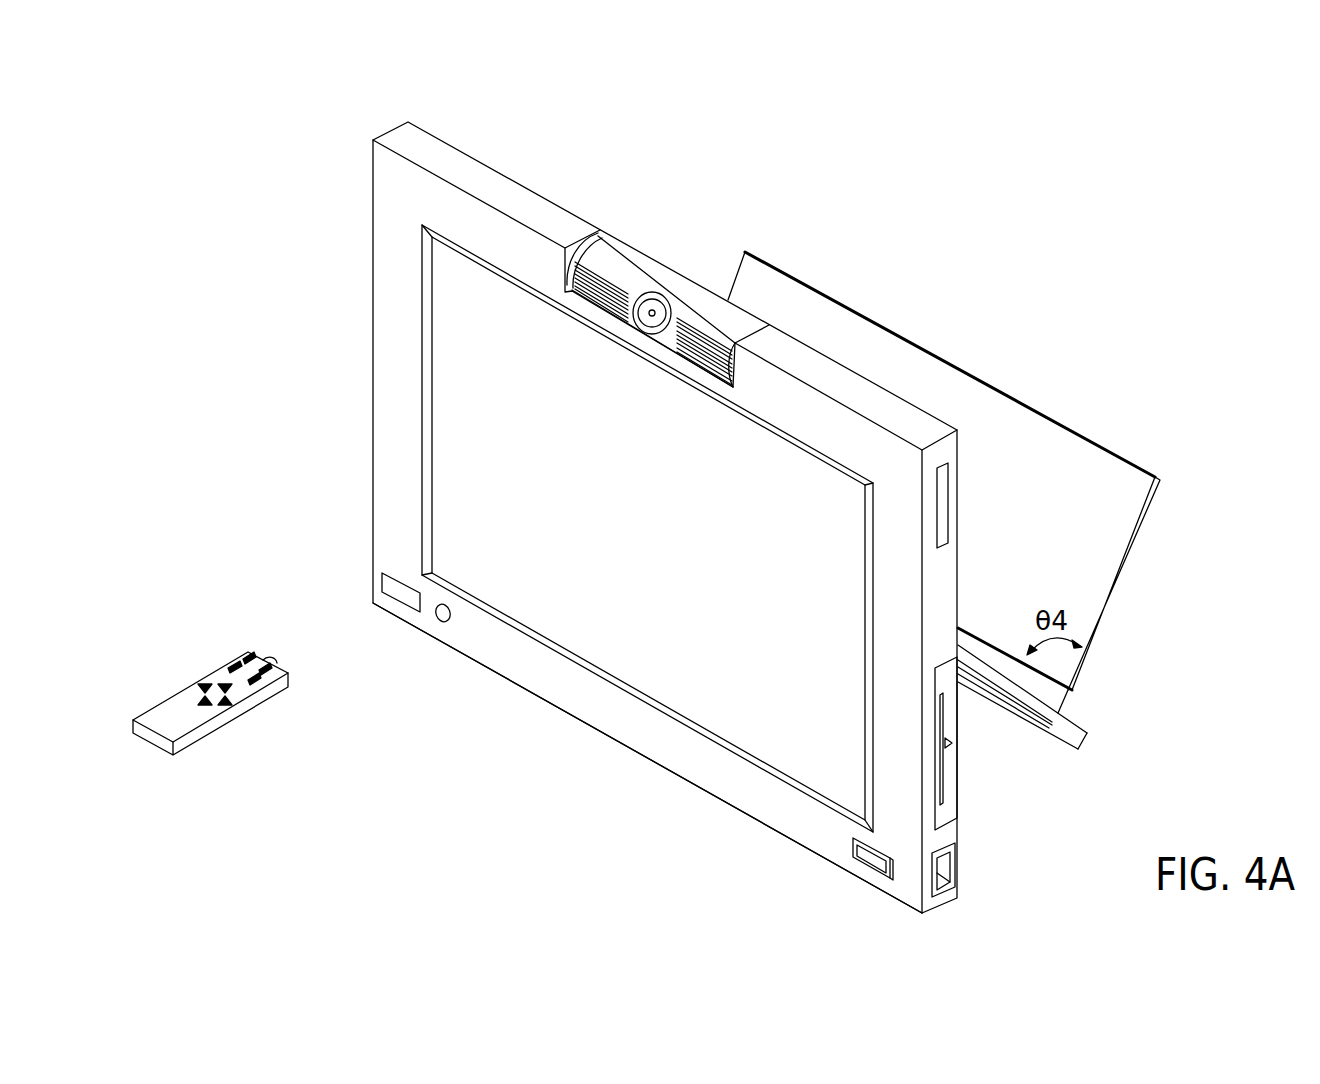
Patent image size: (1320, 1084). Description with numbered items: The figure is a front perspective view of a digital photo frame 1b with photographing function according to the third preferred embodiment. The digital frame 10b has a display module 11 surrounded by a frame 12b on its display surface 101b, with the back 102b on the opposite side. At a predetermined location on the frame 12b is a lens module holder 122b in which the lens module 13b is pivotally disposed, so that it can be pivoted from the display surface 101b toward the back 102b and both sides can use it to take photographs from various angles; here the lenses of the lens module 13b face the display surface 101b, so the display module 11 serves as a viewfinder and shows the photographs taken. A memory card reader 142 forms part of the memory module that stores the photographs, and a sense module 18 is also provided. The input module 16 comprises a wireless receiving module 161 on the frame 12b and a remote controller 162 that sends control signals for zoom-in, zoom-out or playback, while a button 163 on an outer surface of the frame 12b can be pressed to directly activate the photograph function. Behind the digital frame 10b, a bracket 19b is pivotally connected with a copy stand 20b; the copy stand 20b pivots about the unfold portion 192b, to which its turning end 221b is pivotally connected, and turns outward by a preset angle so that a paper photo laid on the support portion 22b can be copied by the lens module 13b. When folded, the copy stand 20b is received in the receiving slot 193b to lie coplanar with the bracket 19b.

The digital photo frame 1b is at (1142, 257).
The digital frame 10b is at (619, 511).
The display module 11 is at (450, 373).
The frame 12b is at (397, 222).
The lens module holder 122b is at (566, 251).
The lens module 13b is at (668, 297).
The memory card reader 142 is at (942, 468).
The input module 16 is at (272, 641).
The wireless receiving module 161 is at (395, 583).
The remote controller 162 is at (187, 700).
The sense module 18 is at (440, 620).
The bracket 19b is at (1071, 735).
The unfold portion 192b is at (1082, 745).
The receiving slot 193b is at (978, 690).
The copy stand 20b is at (987, 495).
The support portion 22b is at (1058, 477).
The turning end 221b is at (1070, 708).
The display surface 101b is at (822, 845).
The back 102b is at (957, 840).
The button 163 is at (867, 863).